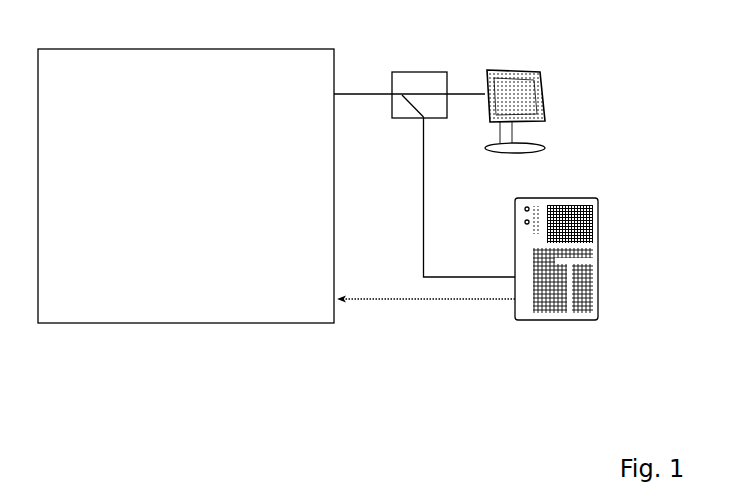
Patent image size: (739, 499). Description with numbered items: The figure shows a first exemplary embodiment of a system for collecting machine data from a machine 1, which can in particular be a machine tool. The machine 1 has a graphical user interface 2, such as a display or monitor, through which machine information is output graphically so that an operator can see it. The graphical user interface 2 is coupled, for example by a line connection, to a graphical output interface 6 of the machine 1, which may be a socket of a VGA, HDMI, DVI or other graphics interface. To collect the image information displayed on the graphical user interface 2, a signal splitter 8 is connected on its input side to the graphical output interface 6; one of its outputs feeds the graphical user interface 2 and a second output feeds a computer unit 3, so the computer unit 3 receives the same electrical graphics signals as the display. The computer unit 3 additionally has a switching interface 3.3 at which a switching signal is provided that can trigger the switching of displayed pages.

The machine 1 is at (181, 194).
The graphical user interface 2 is at (537, 93).
The computer unit 3 is at (562, 325).
The switching interface 3.3 is at (505, 310).
The graphical output interface 6 is at (346, 111).
The signal splitter 8 is at (427, 72).